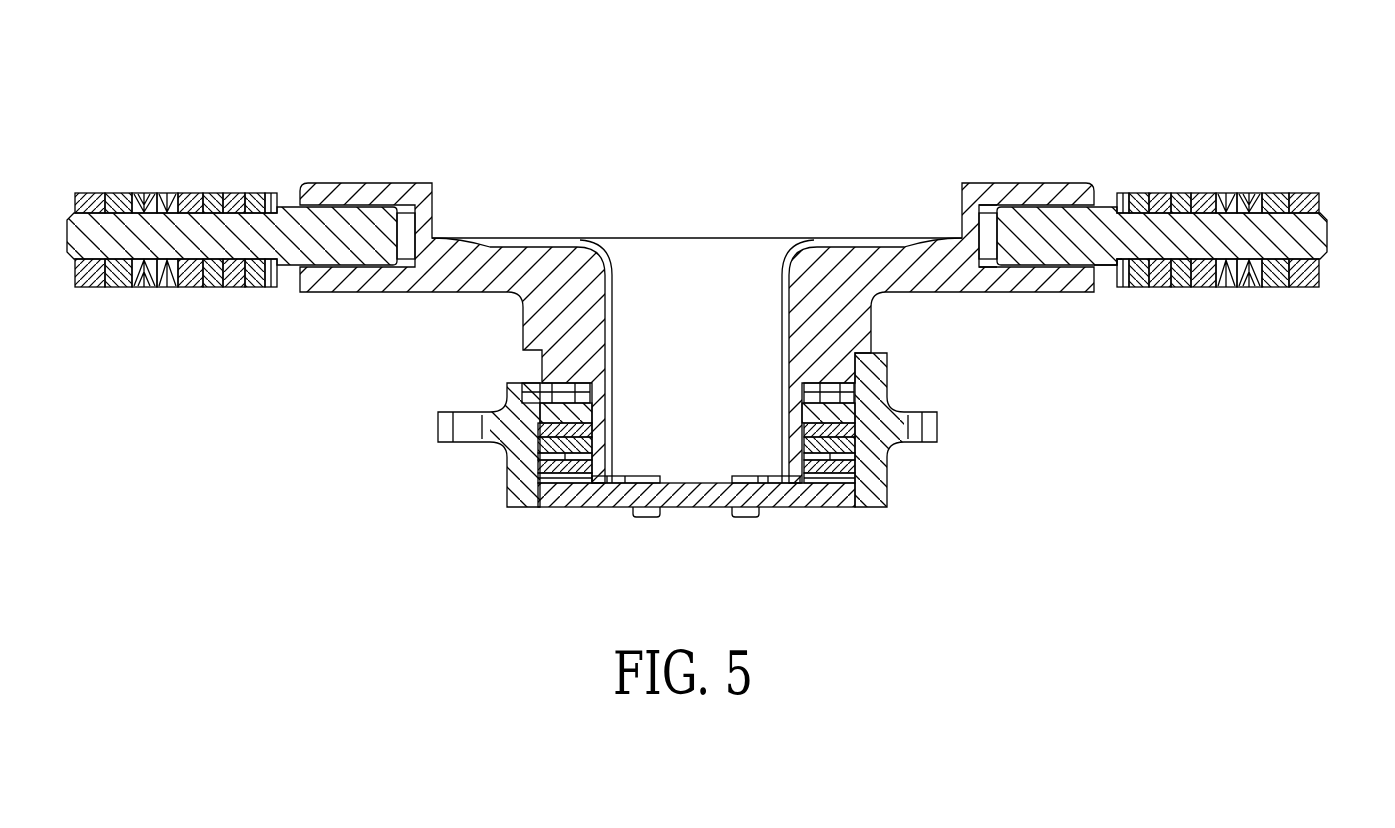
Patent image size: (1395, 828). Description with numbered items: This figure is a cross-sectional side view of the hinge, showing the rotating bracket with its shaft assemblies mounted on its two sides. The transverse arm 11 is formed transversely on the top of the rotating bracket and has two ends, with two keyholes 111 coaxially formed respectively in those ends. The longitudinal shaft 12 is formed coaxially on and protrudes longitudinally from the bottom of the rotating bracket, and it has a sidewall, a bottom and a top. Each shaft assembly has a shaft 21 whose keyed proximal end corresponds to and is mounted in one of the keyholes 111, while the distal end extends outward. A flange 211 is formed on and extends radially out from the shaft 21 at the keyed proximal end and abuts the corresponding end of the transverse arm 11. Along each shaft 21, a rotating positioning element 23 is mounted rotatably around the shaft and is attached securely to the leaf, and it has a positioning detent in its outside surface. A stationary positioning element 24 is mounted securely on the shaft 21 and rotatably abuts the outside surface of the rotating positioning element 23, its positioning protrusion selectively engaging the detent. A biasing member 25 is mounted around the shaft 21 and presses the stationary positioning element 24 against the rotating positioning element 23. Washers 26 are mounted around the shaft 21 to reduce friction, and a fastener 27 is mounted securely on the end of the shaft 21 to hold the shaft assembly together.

The transverse arm 11 is at (970, 195).
The keyhole 111 is at (997, 288).
The longitudinal shaft 12 is at (595, 415).
The shaft 21 is at (1083, 237).
The flange 211 is at (1107, 265).
The rotating positioning element 23 is at (1167, 192).
The stationary positioning element 24 is at (1190, 192).
The biasing member 25 is at (1240, 192).
The washers 26 is at (1287, 192).
The fastener 27 is at (1320, 202).